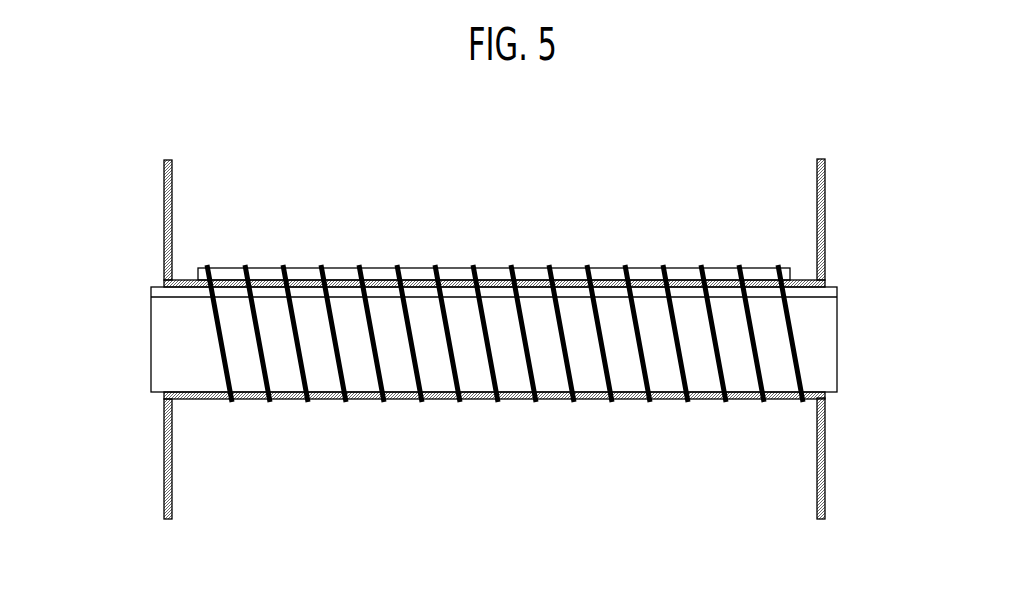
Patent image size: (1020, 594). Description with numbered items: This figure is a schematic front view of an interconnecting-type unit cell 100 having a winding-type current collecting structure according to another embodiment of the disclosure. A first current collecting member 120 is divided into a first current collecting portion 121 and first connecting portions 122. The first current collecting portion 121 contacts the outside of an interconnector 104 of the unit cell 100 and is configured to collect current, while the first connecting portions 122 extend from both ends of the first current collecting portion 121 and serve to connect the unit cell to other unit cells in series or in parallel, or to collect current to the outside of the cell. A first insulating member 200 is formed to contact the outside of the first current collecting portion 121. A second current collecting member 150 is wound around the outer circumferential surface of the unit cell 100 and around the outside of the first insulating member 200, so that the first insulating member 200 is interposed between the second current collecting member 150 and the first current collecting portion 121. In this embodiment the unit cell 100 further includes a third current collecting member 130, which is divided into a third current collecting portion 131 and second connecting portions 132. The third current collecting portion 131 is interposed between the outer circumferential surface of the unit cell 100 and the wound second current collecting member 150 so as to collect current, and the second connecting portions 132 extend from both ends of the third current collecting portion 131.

The interconnecting-type unit cell 100 is at (146, 372).
The interconnector 104 is at (160, 293).
The first current collecting member 120 is at (494, 223).
The first current collecting portion 121 is at (182, 278).
The first connecting portion 122 is at (168, 205).
The third current collecting member 130 is at (494, 455).
The third current collecting portion 131 is at (180, 399).
The second connecting portion 132 is at (168, 472).
The second current collecting member 150 is at (492, 380).
The first insulating member 200 is at (450, 275).